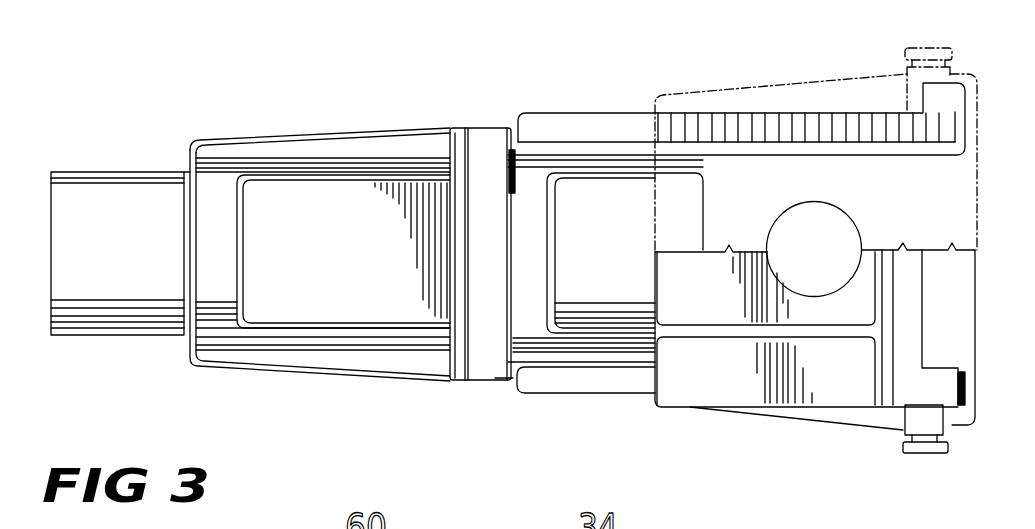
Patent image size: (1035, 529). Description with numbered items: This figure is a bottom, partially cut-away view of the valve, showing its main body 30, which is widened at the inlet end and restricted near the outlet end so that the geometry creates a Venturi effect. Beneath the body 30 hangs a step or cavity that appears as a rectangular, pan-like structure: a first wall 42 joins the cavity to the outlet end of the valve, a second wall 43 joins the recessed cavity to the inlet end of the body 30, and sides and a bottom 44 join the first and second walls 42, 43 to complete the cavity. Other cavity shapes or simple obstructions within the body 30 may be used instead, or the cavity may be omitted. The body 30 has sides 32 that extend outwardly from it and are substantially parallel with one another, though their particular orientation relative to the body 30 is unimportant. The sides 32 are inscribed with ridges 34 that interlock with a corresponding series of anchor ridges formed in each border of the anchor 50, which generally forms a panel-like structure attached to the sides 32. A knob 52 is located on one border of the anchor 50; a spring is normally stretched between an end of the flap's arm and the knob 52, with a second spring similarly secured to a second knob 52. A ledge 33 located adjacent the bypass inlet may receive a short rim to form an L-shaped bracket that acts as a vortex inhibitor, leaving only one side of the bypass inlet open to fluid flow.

The main body 30 is at (471, 383).
The sides 32 is at (572, 125).
The ledge 33 is at (310, 140).
The ridges 34 is at (807, 127).
The first wall 42 is at (236, 210).
The second wall 43 is at (555, 207).
The bottom 44 is at (310, 302).
The anchor 50 is at (733, 383).
The knob 52 is at (928, 453).